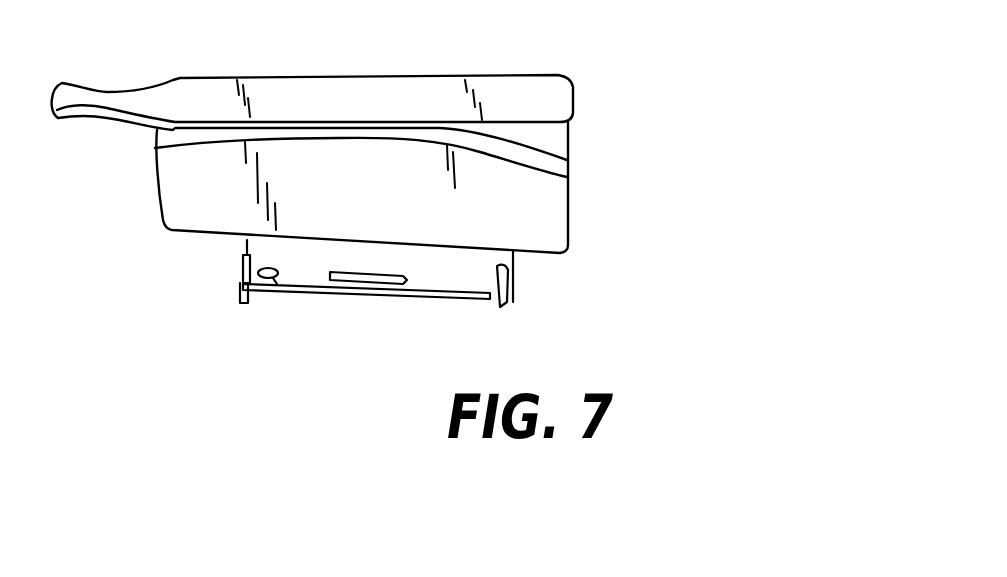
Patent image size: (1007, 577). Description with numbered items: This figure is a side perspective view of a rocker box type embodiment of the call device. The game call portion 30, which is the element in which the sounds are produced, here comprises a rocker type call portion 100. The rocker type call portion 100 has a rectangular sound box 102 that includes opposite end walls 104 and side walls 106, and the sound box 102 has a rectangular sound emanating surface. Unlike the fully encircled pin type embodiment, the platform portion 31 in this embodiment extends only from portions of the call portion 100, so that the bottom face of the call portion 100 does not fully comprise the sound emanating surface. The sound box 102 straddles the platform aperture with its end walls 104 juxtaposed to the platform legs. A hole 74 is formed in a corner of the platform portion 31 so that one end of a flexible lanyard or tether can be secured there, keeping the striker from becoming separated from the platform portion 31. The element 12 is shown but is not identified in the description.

The game call portion 30 is at (374, 200).
The rocker type call portion 100 is at (472, 64).
The rectangular sound box 102 is at (526, 215).
The end walls 104 is at (153, 178).
The side walls 106 is at (200, 198).
The platform portion 31 is at (372, 319).
The rail 12 is at (473, 282).
The hole 74 is at (278, 287).